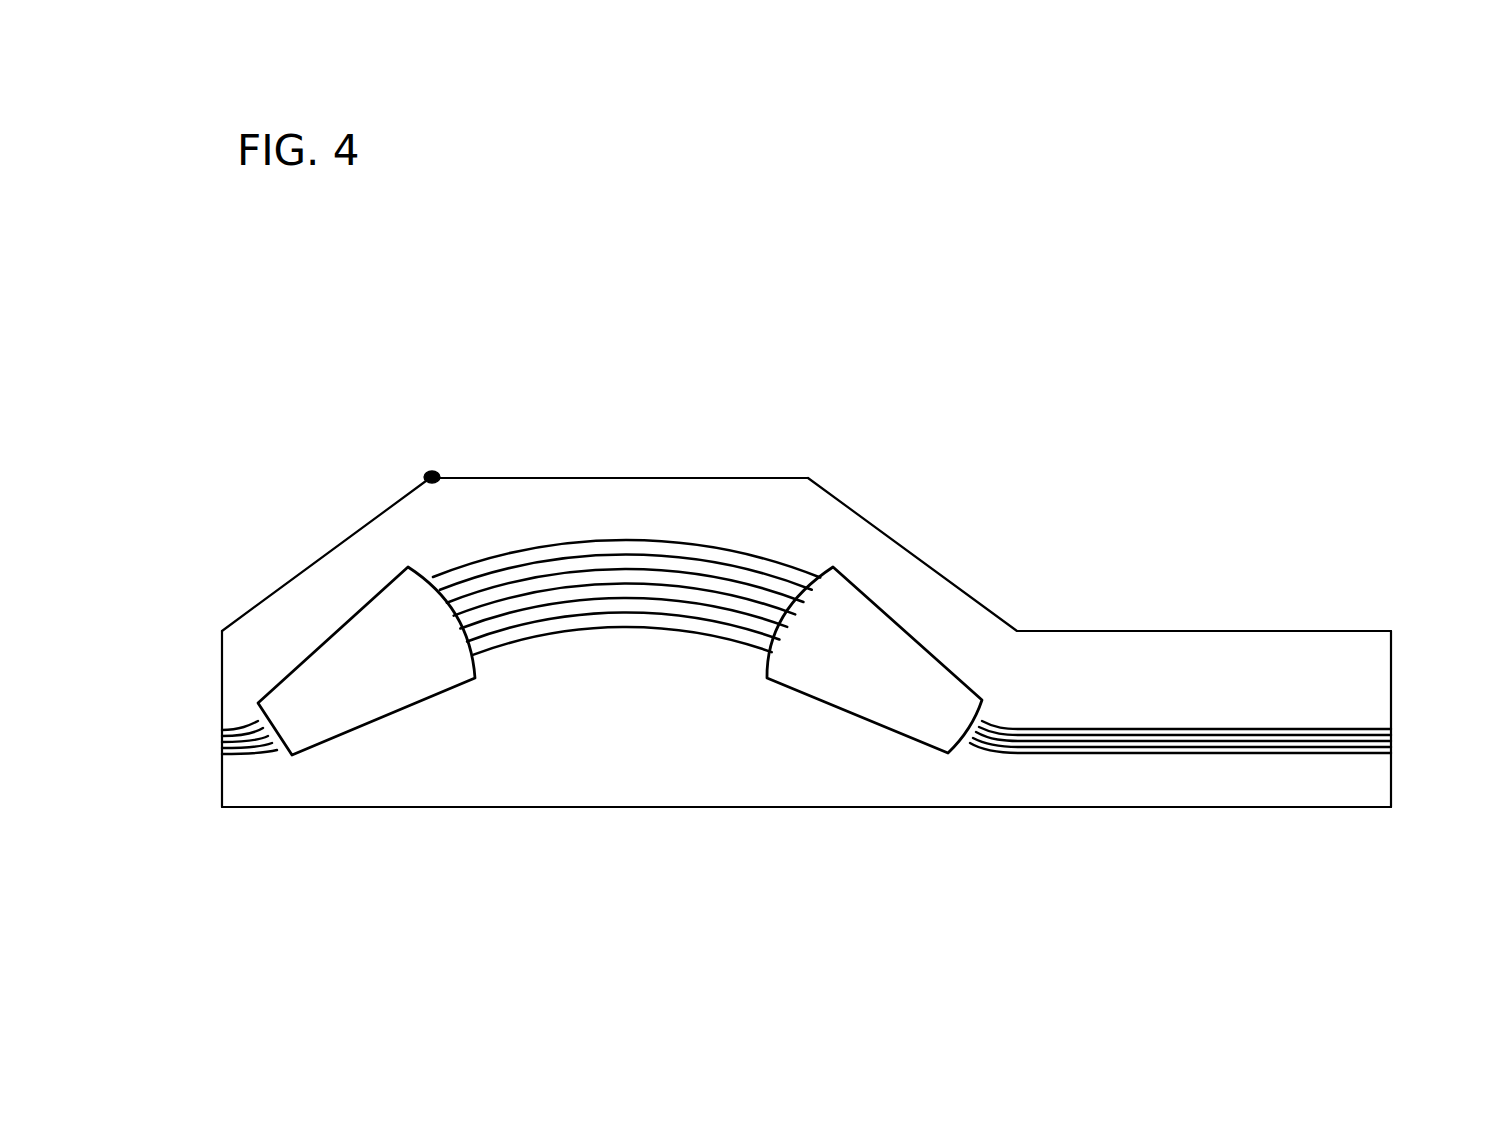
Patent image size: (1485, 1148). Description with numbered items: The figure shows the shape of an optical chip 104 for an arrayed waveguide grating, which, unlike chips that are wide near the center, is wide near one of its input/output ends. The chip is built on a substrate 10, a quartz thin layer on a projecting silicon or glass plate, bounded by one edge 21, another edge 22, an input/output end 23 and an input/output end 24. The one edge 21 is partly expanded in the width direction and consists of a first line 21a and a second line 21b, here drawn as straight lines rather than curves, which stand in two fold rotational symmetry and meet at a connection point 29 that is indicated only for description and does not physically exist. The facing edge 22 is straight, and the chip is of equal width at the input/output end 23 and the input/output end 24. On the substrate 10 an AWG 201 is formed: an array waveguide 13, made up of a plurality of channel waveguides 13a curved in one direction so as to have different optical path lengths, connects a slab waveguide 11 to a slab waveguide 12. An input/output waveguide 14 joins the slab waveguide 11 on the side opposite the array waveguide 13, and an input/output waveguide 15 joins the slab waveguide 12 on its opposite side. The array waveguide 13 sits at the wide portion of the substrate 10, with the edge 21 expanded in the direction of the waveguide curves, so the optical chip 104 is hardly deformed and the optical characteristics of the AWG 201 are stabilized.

The optical chip 104 is at (305, 307).
The substrate 10 is at (1147, 667).
The arrayed waveguide grating type optical multiplexer/demultiplexer circuit 201 is at (563, 199).
The slab waveguide 11 is at (363, 730).
The slab waveguide 12 is at (892, 733).
The array waveguide 13 is at (634, 660).
The channel waveguide 13a is at (755, 558).
The input/output waveguide 14 is at (232, 725).
The input/output waveguide 15 is at (1217, 717).
The one edge 21 is at (382, 379).
The first line 21a is at (398, 497).
The second line 21b is at (463, 478).
The another edge 22 is at (685, 808).
The input/output end 23 is at (222, 707).
The input/output end 24 is at (1391, 697).
The connection point 29 is at (430, 476).